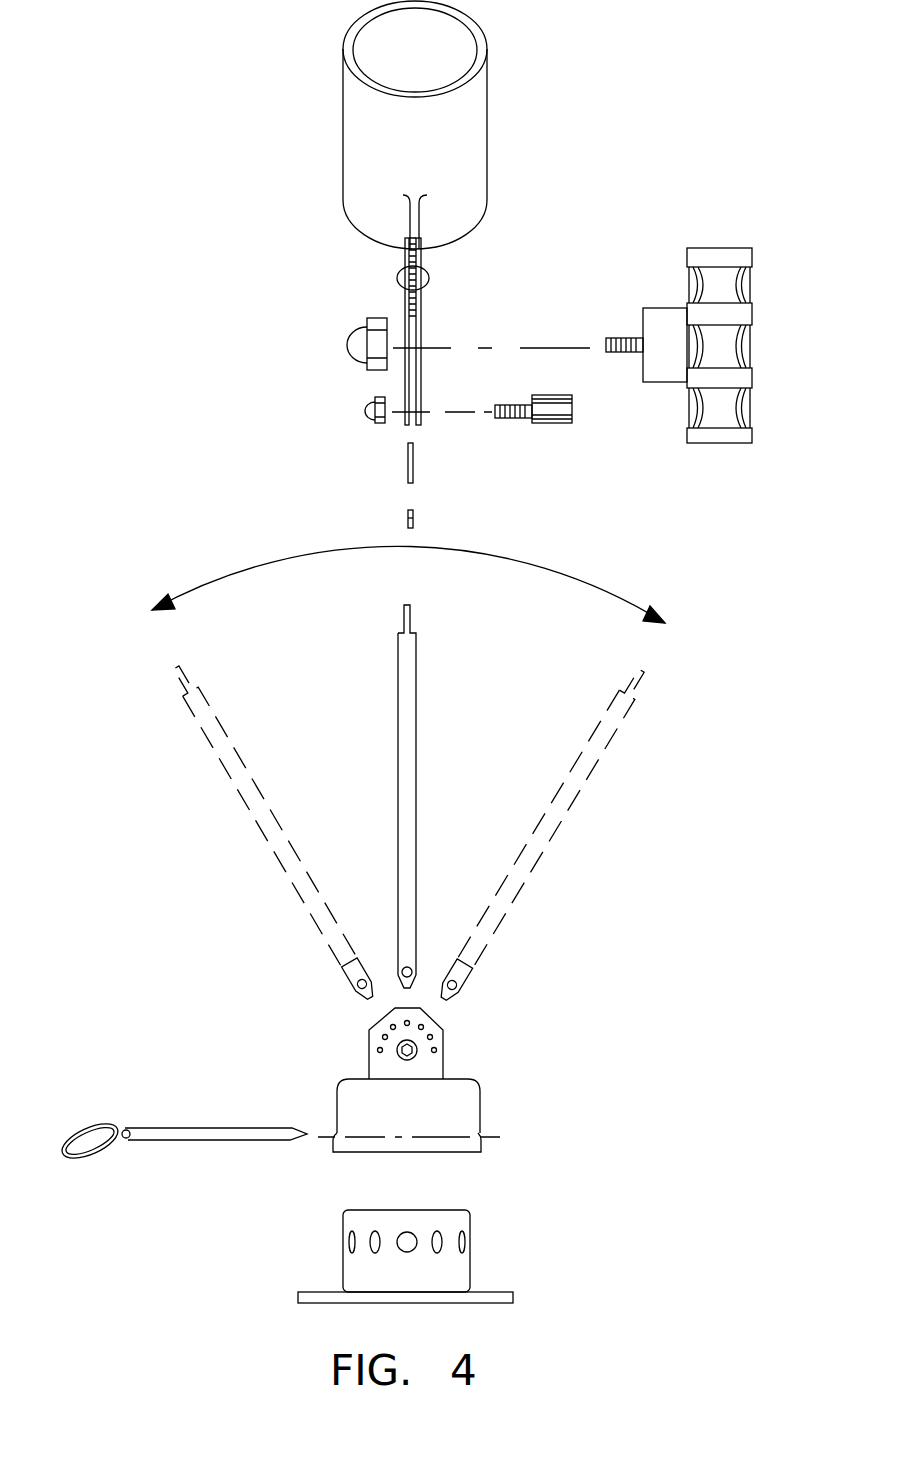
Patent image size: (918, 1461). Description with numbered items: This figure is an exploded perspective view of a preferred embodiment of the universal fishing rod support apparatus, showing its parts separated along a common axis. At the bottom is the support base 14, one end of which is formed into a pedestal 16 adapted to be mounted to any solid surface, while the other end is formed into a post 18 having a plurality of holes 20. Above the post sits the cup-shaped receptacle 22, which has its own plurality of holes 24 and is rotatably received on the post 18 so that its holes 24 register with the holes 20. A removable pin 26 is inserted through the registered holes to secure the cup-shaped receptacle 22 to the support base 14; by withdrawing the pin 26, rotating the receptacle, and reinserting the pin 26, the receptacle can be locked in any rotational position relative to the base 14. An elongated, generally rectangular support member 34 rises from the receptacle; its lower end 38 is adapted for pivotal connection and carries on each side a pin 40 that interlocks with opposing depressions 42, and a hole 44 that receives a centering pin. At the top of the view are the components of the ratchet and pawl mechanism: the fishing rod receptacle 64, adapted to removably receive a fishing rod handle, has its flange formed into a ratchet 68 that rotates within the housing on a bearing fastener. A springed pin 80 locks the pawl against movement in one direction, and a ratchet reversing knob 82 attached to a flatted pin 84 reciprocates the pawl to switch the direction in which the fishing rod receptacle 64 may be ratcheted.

The support base 14 is at (454, 1241).
The pedestal 16 is at (513, 1297).
The post 18 is at (510, 1226).
The holes 20 is at (407, 1232).
The cup-shaped receptacle 22 is at (352, 1093).
The holes 24 is at (478, 1138).
The removable pin 26 is at (198, 1137).
The support member 34 is at (442, 796).
The lower end 38 is at (382, 922).
The pin 40 is at (442, 906).
The depressions 42 is at (385, 1037).
The hole 44 is at (463, 982).
The fishing rod receptacle 64 is at (465, 125).
The ratchet 68 is at (408, 300).
The springed pin 80 is at (496, 418).
The ratchet reversing knob 82 is at (752, 382).
The pin 84 is at (617, 352).